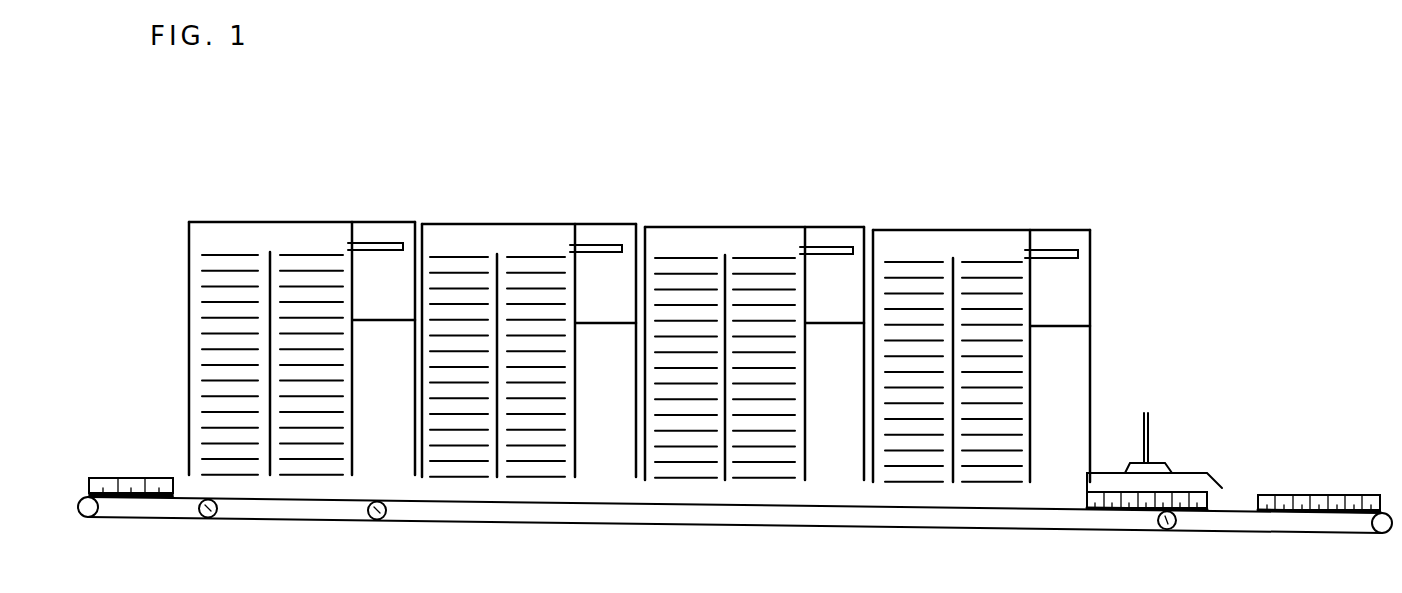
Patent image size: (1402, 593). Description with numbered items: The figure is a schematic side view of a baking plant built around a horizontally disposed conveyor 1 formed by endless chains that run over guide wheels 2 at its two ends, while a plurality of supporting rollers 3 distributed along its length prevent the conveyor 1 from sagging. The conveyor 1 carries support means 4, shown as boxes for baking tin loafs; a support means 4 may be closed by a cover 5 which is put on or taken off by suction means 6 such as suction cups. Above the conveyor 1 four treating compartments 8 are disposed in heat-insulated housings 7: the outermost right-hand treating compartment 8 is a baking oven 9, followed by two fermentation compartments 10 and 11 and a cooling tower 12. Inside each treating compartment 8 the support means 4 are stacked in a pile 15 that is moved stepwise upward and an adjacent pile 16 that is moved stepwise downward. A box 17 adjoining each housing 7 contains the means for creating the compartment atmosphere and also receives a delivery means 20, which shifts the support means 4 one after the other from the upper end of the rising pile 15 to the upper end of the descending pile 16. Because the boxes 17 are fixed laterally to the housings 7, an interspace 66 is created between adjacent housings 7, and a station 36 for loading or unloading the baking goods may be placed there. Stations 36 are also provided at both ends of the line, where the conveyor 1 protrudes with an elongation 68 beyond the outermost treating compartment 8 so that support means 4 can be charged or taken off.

The conveyor 1 is at (658, 527).
The guide wheels 2 is at (88, 518).
The supporting rollers 3 is at (210, 518).
The support means 4 is at (728, 462).
The cover 5 is at (1103, 480).
The suction means 6 is at (1150, 468).
The housing 7 is at (291, 222).
The treating compartment 8 is at (212, 235).
The baking oven 9 is at (984, 229).
The fermentation compartment 10 is at (701, 226).
The fermentation compartment 11 is at (556, 224).
The cooling tower 12 is at (351, 221).
The pile 15 is at (330, 375).
The pile 16 is at (210, 372).
The box 17 is at (370, 302).
The delivery means 20 is at (1055, 252).
The station 36 is at (1370, 478).
The interspace 66 is at (400, 427).
The elongation 68 is at (135, 500).